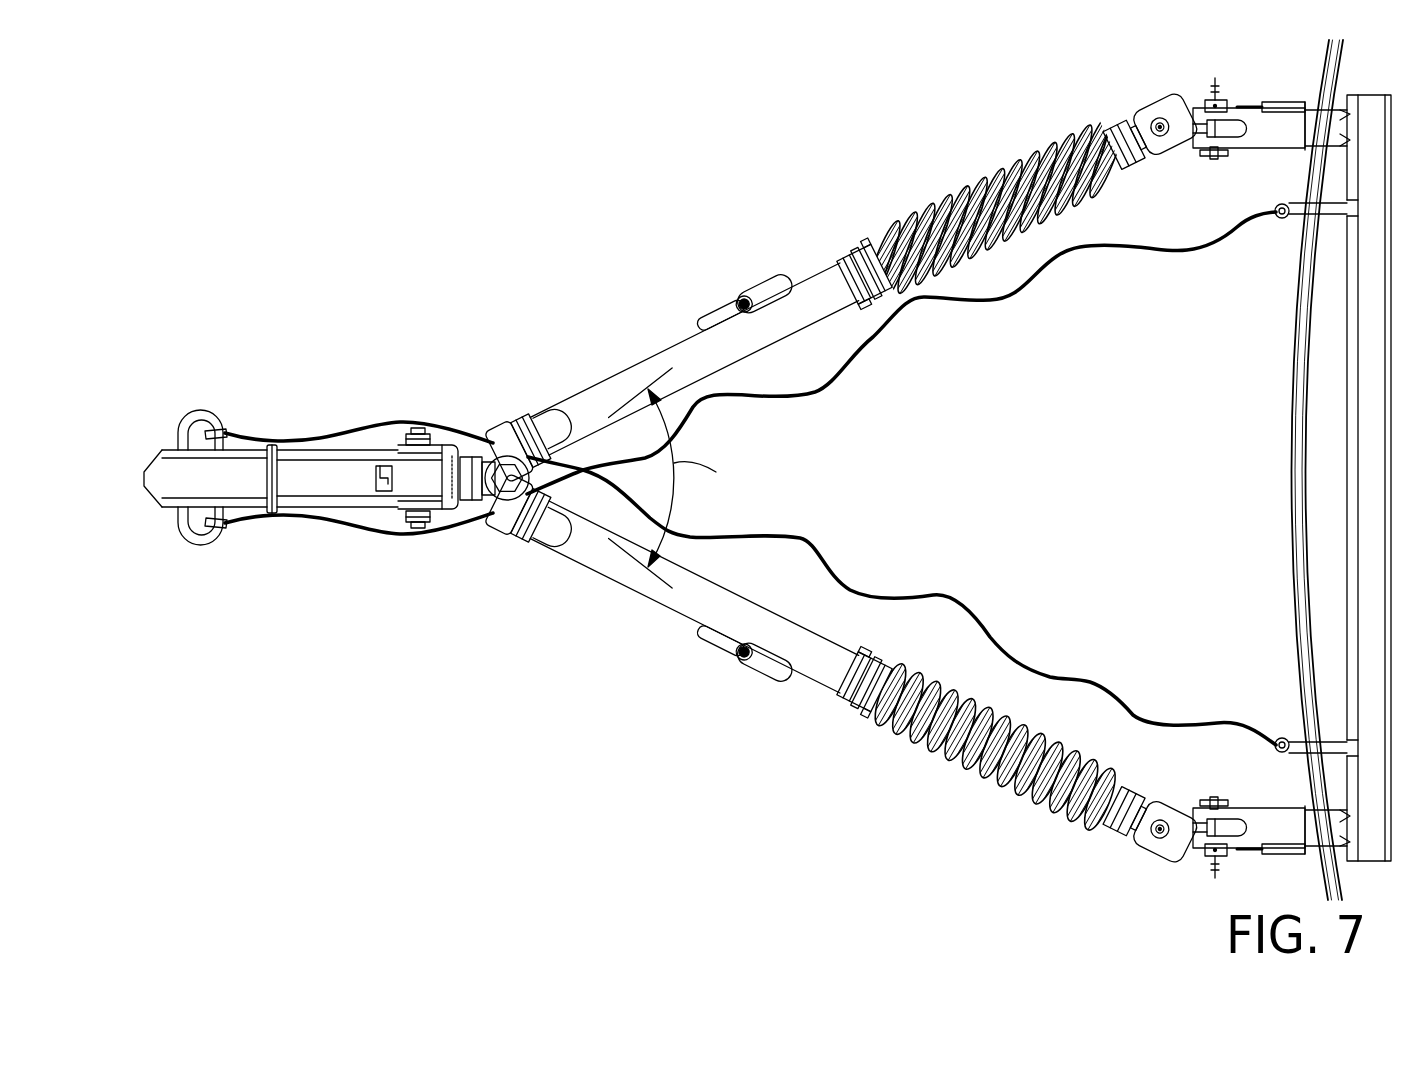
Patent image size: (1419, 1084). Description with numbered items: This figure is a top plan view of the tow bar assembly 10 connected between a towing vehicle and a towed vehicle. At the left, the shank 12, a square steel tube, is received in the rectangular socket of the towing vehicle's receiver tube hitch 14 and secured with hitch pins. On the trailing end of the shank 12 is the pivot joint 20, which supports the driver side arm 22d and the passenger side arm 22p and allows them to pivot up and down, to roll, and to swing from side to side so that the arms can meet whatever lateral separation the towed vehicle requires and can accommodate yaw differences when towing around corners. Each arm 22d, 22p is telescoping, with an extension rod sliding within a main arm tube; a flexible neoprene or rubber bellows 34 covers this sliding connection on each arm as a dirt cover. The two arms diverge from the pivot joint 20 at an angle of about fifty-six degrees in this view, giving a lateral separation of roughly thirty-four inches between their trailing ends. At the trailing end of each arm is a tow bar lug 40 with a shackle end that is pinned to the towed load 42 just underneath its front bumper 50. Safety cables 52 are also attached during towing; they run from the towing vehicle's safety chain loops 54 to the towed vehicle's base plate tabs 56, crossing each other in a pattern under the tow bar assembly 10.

The tow bar assembly 10 is at (467, 255).
The shank 12 is at (298, 458).
The receiver tube hitch 14 is at (237, 450).
The pivot joint 20 is at (491, 415).
The passenger side arm 22p is at (683, 357).
The driver side arm 22d is at (713, 603).
The bellows 34 is at (1001, 183).
The tow bar lug 40 is at (1181, 137).
The towed load 42 is at (1371, 413).
The front bumper 50 is at (1294, 449).
The safety cables 52 is at (862, 362).
The safety chain loops 54 is at (207, 410).
The base plate tabs 56 is at (1283, 140).